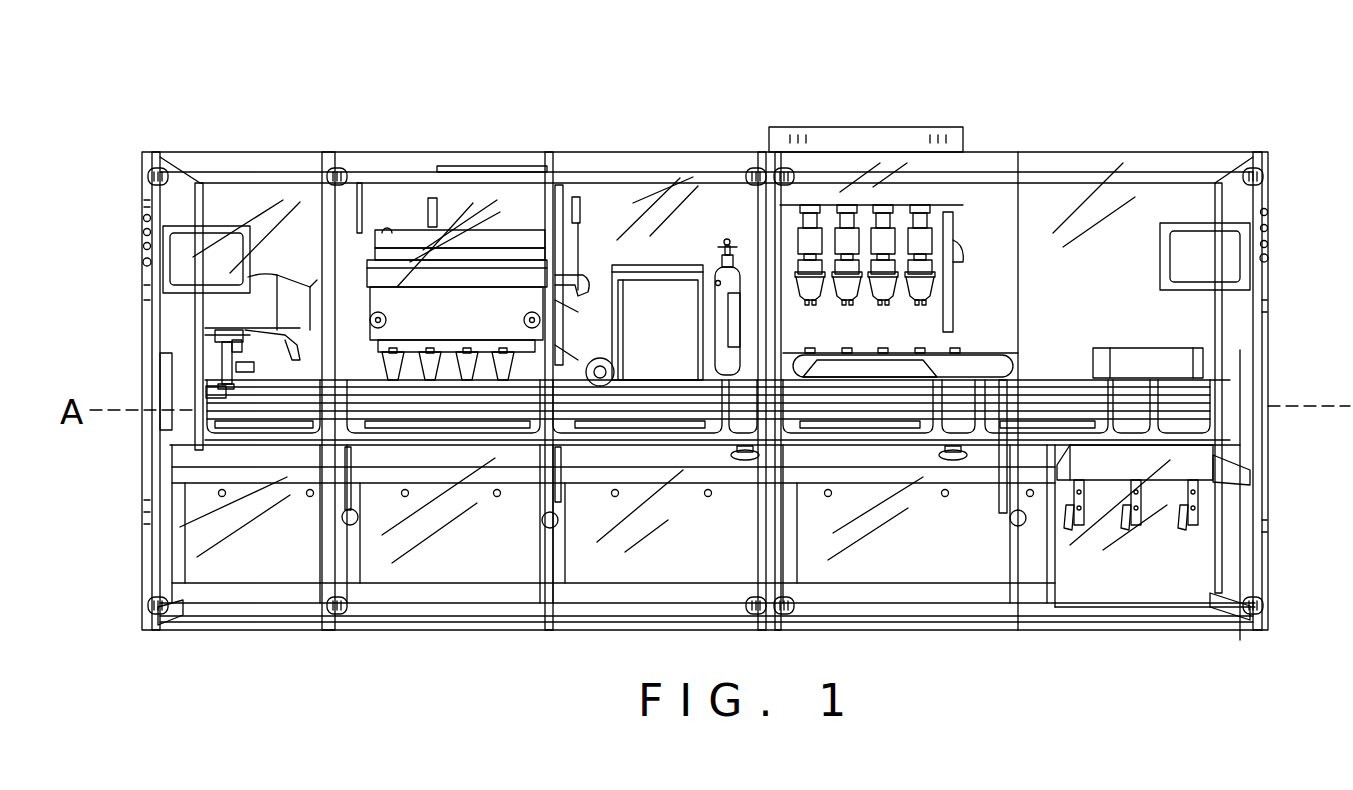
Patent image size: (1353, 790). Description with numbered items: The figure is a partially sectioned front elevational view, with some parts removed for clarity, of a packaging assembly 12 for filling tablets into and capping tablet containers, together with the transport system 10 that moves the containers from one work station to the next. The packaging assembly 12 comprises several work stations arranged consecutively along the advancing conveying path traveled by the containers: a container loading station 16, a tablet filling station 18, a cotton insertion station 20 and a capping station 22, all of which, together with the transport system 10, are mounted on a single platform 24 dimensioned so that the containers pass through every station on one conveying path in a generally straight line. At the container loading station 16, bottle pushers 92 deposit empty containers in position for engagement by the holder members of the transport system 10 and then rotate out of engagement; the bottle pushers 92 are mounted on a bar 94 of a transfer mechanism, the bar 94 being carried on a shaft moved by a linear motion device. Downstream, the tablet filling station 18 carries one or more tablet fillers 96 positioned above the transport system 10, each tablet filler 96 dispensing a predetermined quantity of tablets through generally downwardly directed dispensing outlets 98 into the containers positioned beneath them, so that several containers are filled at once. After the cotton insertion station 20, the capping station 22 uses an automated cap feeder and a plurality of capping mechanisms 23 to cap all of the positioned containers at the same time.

The transport system 10 is at (223, 415).
The packaging assembly 12 is at (722, 92).
The container loading station 16 is at (218, 349).
The tablet filling station 18 is at (450, 314).
The cotton insertion station 20 is at (659, 326).
The capping station 22 is at (934, 192).
The capping mechanisms 23 is at (930, 298).
The platform 24 is at (1040, 577).
The bottle pushers 92 is at (240, 386).
The bar 94 is at (247, 367).
The tablet fillers 96 is at (447, 374).
The tablet filler dispensing outlets 98 is at (473, 373).